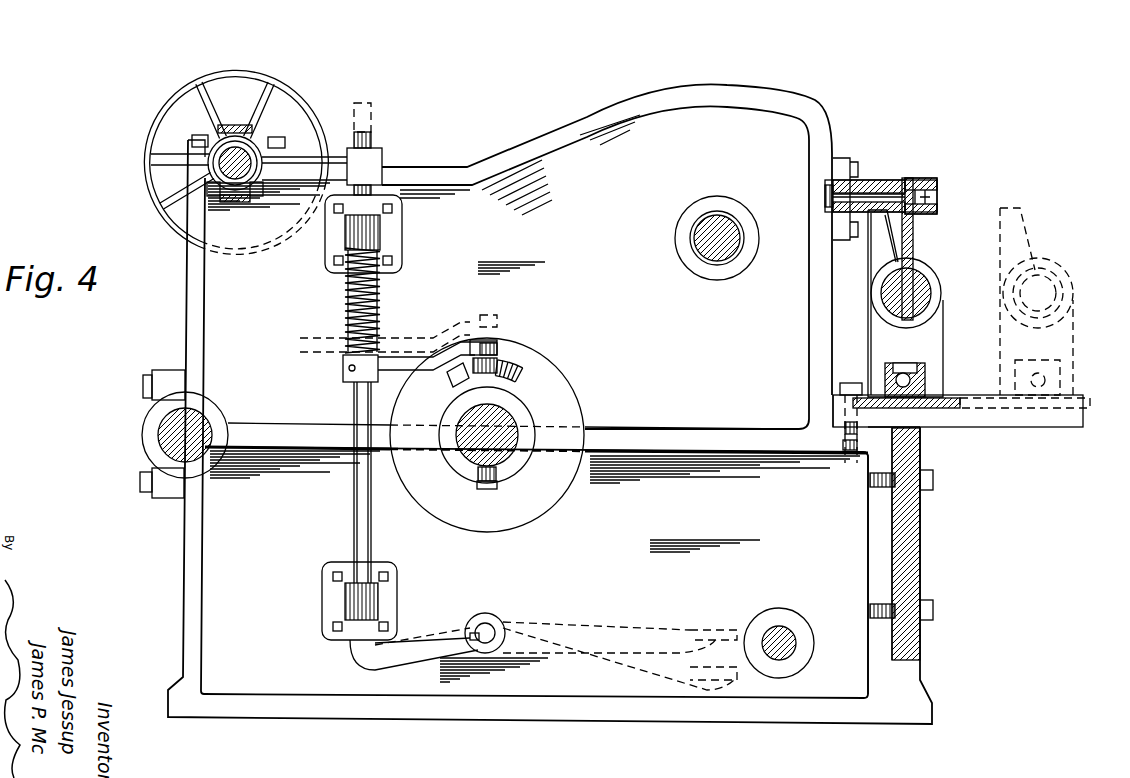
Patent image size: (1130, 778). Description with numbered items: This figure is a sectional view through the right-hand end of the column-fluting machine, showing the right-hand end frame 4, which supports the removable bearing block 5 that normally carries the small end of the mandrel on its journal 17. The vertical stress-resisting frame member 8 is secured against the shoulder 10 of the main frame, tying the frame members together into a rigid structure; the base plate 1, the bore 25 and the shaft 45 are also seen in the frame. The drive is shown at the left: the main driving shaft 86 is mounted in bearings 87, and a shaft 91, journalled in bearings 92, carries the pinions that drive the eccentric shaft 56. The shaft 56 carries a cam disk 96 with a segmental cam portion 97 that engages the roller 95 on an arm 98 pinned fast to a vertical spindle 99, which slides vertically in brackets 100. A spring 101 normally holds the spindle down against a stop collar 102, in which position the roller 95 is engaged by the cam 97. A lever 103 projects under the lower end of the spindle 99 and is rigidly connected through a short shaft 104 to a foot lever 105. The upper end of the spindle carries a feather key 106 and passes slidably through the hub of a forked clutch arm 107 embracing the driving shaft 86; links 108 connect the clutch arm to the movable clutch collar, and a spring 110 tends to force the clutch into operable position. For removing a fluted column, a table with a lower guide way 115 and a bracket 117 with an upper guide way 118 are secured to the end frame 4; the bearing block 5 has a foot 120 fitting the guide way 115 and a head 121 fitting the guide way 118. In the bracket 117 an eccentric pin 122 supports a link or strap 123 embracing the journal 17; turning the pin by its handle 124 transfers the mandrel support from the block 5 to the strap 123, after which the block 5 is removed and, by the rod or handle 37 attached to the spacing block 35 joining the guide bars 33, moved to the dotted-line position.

The base plate 1 is at (1010, 425).
The right-hand end frame 4 is at (832, 724).
The removable bearing block 5 is at (1060, 330).
The vertical stress-resisting frame member 8 is at (920, 548).
The shoulder 10 is at (903, 665).
The journal 17 is at (925, 292).
The shaft 25 is at (700, 245).
The guide bars 33 is at (1065, 385).
The spacing block 35 is at (905, 400).
The rod or handle 37 is at (1060, 375).
The shaft 45 is at (797, 643).
The eccentric shaft 56 is at (515, 445).
The main driving shaft 86 is at (235, 163).
The bearings 87 is at (203, 150).
The shaft 91 is at (210, 420).
The bearings 92 is at (165, 455).
The roller 95 is at (455, 382).
The cam disk 96 is at (563, 393).
The segmental cam portion 97 is at (570, 348).
The arm 98 is at (410, 365).
The vertical spindle 99 is at (362, 515).
The brackets 100 is at (380, 590).
The spring 101 is at (378, 298).
The stop collar 102 is at (375, 203).
The lever 103 is at (430, 640).
The short shaft 104 is at (490, 630).
The foot lever 105 is at (605, 630).
The feather key 106 is at (357, 135).
The forked clutch arm 107 is at (300, 175).
The links 108 is at (235, 202).
The spring 110 is at (250, 150).
The guide way 115 is at (950, 400).
The bracket 117 is at (858, 195).
The guide way 118 is at (876, 200).
The foot 120 is at (870, 395).
The head 121 is at (876, 215).
The eccentric pin 122 is at (925, 190).
The link or strap 123 is at (913, 240).
The handle 124 is at (930, 200).